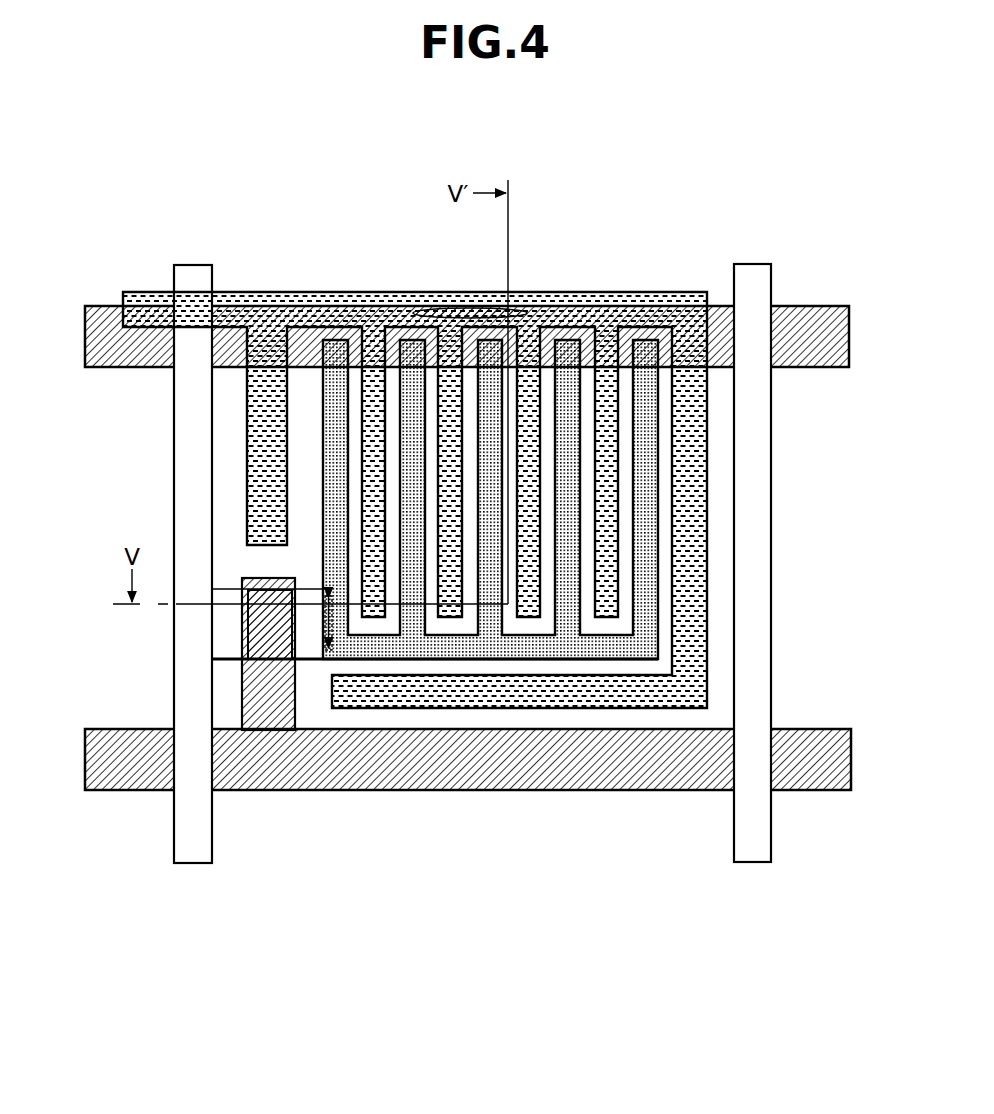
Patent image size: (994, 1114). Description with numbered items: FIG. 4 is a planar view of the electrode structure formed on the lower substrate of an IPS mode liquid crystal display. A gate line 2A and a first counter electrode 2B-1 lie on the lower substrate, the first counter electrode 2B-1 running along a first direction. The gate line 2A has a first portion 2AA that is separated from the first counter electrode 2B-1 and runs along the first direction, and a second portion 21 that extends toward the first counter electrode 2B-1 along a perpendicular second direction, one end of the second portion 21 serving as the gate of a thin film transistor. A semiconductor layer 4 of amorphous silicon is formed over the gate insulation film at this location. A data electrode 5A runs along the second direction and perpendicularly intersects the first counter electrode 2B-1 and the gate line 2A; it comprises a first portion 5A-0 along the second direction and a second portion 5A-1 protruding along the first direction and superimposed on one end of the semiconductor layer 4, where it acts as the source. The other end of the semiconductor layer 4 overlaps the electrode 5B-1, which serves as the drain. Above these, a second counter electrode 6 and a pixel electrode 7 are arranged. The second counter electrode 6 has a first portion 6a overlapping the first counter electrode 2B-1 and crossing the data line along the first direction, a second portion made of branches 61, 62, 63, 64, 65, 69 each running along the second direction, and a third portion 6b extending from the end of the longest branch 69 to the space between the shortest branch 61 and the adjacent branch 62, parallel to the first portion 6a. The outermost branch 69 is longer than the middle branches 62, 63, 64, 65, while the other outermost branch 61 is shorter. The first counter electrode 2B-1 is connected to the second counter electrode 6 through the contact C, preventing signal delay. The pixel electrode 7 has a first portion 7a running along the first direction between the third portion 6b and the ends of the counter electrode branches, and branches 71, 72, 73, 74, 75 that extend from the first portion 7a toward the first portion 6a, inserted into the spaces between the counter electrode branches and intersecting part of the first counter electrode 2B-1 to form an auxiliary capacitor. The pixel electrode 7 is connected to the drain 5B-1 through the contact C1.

The gate line 2A is at (818, 797).
The first portion of the gate line 2AA is at (802, 735).
The first counter electrode 2B-1 is at (808, 305).
The semiconductor layer 4 is at (265, 645).
The data electrode 5A is at (195, 875).
The first portion of the data electrode 5A-0 is at (199, 650).
The second portion of the data electrode 5A-1 is at (227, 656).
The drain electrode 5B-1 is at (312, 648).
The second counter electrode 6 is at (523, 288).
The first portion of the second counter electrode 6a is at (267, 303).
The third portion of the second counter electrode 6b is at (670, 697).
The branch of the second counter electrode 61 is at (248, 458).
The branch of the second counter electrode 62 is at (375, 612).
The branch of the second counter electrode 63 is at (455, 612).
The branch of the second counter electrode 64 is at (532, 612).
The branch of the second counter electrode 65 is at (607, 612).
The branch of the second counter electrode 69 is at (700, 425).
The pixel electrode 7 is at (500, 666).
The first portion of the pixel electrode 7a is at (570, 648).
The branch of the pixel electrode 71 is at (333, 343).
The branch of the pixel electrode 72 is at (410, 343).
The branch of the pixel electrode 73 is at (486, 343).
The branch of the pixel electrode 74 is at (567, 343).
The branch of the pixel electrode 75 is at (642, 343).
The second portion of the gate line 21 is at (278, 708).
The contact C is at (458, 310).
The contact C1 is at (326, 595).